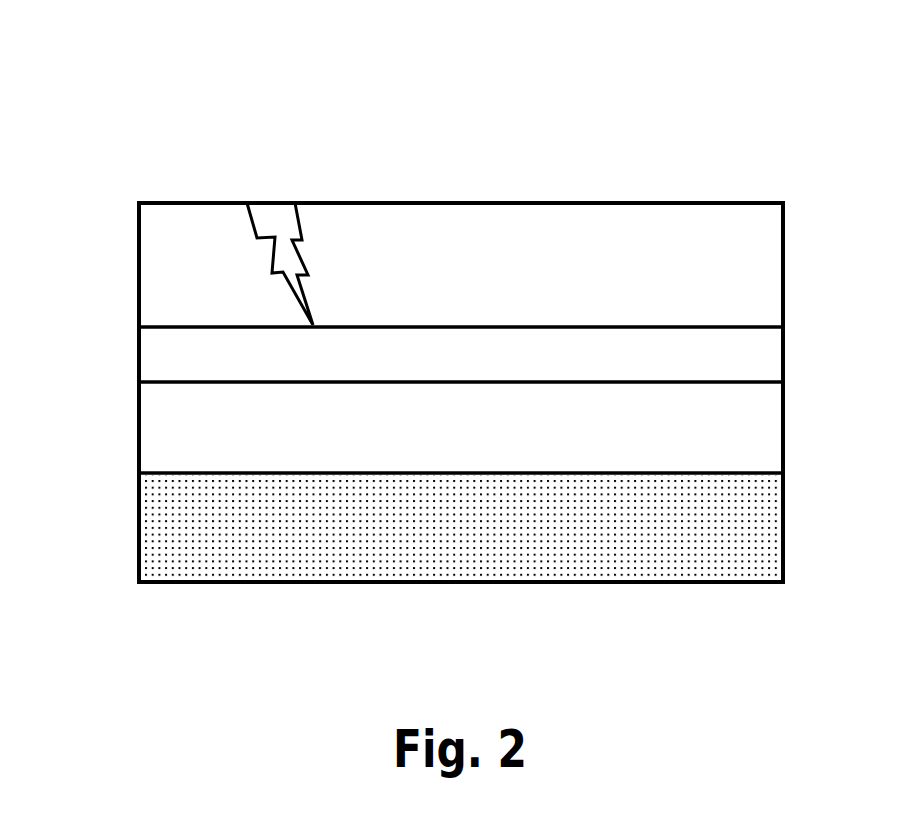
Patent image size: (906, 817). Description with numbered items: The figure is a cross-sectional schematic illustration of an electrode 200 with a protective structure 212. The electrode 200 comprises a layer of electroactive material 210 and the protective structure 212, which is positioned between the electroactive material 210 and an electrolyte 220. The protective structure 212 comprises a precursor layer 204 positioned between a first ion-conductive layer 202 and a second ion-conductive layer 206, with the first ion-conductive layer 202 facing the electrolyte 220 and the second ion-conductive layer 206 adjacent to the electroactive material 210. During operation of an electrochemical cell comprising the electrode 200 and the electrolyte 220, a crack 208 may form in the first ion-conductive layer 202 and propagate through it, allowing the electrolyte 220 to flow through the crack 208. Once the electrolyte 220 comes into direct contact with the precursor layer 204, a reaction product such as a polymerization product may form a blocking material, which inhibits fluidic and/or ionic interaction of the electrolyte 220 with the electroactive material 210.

The electrode 200 is at (110, 100).
The first ion-conductive layer 202 is at (683, 283).
The precursor layer 204 is at (683, 372).
The second ion-conductive layer 206 is at (683, 443).
The crack 208 is at (275, 215).
The electroactive material 210 is at (483, 545).
The protective structure 212 is at (132, 201).
The electrolyte 220 is at (483, 40).